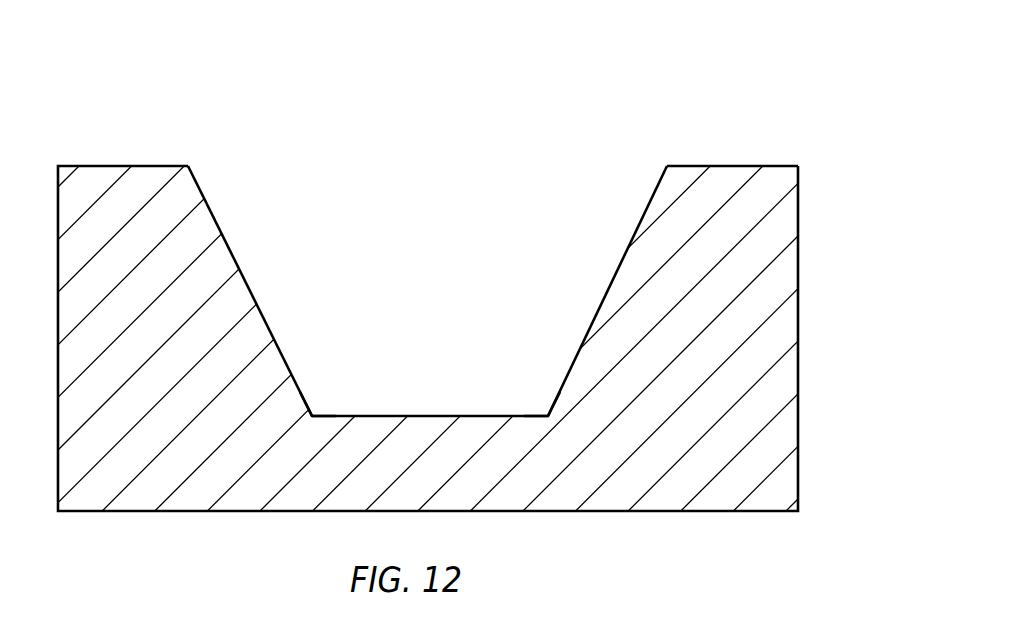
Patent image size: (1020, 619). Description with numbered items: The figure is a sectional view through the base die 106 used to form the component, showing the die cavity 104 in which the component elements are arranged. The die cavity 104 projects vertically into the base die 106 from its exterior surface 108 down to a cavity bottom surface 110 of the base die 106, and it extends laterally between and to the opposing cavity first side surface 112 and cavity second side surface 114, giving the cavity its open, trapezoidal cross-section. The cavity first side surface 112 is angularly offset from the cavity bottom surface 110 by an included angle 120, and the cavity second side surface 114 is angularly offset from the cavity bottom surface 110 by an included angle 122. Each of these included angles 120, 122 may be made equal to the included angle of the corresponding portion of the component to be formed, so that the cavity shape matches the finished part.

The die cavity 104 is at (447, 272).
The base die 106 is at (786, 113).
The exterior surface 108 is at (718, 165).
The cavity bottom surface 110 is at (428, 416).
The cavity first side surface 112 is at (234, 255).
The cavity second side surface 114 is at (630, 245).
The included angle 120 is at (377, 408).
The included angle 122 is at (569, 352).